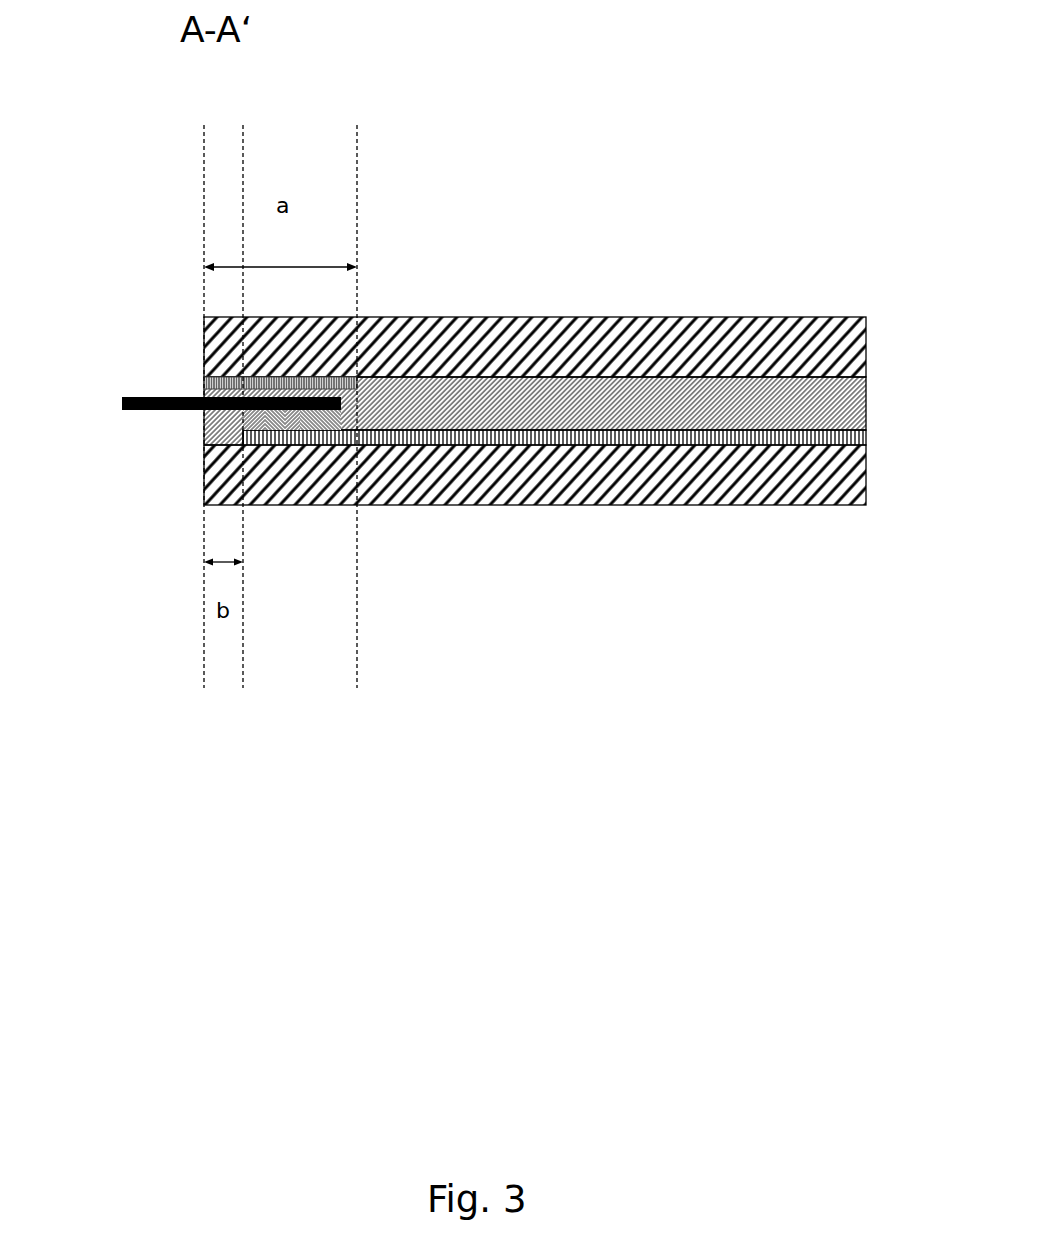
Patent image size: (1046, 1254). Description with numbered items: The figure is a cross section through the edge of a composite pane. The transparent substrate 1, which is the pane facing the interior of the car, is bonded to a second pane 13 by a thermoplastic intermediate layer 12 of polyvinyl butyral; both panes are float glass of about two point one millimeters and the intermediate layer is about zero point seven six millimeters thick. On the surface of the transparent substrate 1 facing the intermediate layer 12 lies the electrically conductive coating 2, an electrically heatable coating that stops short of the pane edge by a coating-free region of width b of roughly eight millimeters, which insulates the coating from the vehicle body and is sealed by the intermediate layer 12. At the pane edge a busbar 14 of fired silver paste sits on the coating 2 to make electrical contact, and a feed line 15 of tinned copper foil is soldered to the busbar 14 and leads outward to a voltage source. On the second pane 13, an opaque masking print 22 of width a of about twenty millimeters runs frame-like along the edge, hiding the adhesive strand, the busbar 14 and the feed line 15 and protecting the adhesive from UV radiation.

The transparent substrate 1 is at (818, 475).
The electrically conductive coating 2 is at (858, 438).
The thermoplastic intermediate layer 12 is at (568, 405).
The second pane 13 is at (768, 318).
The busbar 14 is at (283, 417).
The feed line 15 is at (122, 397).
The masking print 22 is at (207, 378).